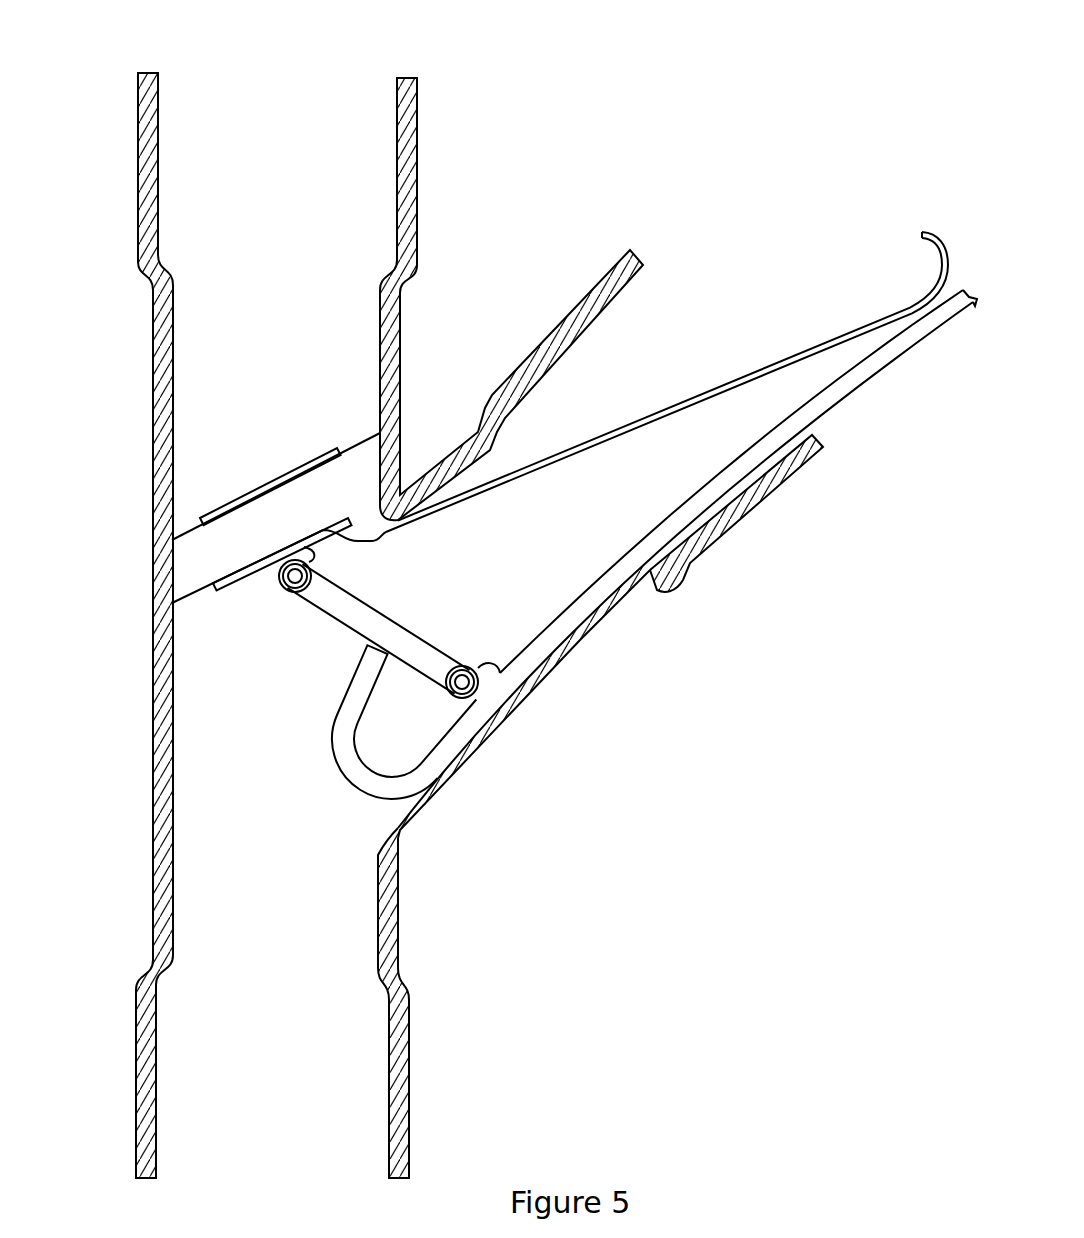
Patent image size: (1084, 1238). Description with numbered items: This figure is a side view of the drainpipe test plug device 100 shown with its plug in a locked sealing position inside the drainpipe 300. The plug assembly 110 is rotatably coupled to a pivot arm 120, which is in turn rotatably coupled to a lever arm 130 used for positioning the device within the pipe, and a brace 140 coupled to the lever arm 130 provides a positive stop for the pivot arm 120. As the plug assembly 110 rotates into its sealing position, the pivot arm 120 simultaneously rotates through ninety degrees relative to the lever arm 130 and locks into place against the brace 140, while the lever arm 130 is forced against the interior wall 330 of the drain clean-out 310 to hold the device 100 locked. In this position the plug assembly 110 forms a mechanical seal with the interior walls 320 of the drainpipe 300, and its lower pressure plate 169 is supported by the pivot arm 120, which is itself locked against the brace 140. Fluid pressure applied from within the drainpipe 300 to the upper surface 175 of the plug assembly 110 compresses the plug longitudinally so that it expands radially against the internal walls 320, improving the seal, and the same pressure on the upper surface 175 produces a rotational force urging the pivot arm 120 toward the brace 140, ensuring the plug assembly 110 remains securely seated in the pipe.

The drainpipe test plug device 100 is at (741, 473).
The plug assembly 110 is at (190, 548).
The pivot arm 120 is at (352, 628).
The lever arm 130 is at (677, 537).
The brace 140 is at (353, 686).
The lower pressure plate 169 is at (282, 567).
The upper surface 175 is at (198, 521).
The drainpipe 300 is at (273, 205).
The drain clean-out 310 is at (700, 335).
The interior walls of the drainpipe 320 is at (181, 336).
The interior wall of the drain clean-out 330 is at (397, 806).